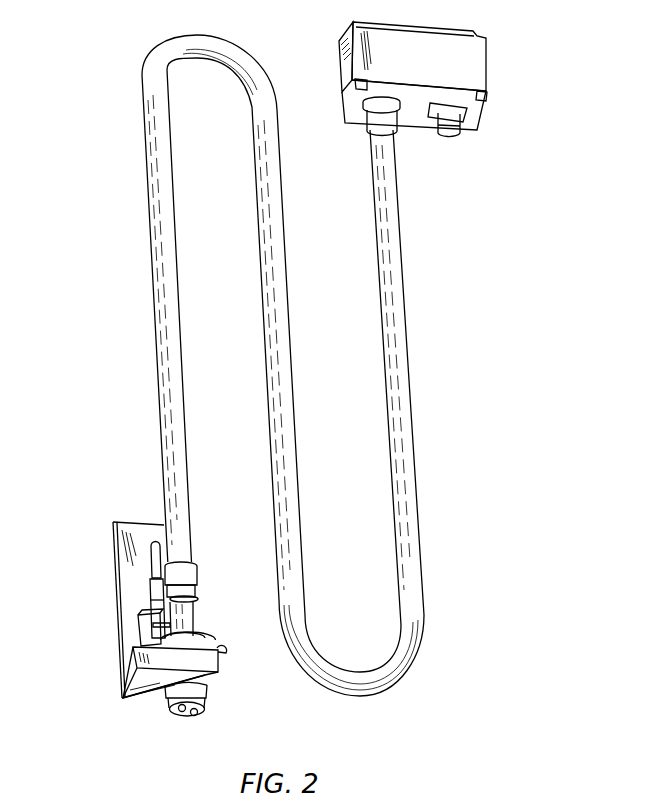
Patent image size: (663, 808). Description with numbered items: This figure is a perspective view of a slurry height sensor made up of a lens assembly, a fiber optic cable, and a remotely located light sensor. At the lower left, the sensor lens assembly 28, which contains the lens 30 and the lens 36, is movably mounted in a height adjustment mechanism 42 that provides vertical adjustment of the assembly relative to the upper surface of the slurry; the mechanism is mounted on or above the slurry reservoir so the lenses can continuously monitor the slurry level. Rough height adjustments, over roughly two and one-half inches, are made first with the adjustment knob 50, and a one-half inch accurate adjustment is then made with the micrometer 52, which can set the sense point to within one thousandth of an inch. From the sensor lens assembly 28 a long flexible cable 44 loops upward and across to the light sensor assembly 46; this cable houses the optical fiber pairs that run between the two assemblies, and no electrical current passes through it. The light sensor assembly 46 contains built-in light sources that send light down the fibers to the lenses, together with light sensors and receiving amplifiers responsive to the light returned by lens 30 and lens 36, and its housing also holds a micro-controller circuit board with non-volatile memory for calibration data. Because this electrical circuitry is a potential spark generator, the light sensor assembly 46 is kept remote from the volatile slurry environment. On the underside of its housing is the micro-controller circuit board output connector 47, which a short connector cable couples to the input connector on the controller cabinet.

The sensor lens assembly 28 is at (214, 693).
The lens 30 is at (199, 714).
The lens 36 is at (179, 710).
The height adjustment mechanism 42 is at (102, 538).
The flexible cable 44 is at (398, 333).
The light sensor assembly 46 is at (478, 63).
The micro-controller circuit board output connector 47 is at (447, 136).
The adjustment knob 50 is at (199, 571).
The micrometer 52 is at (151, 589).